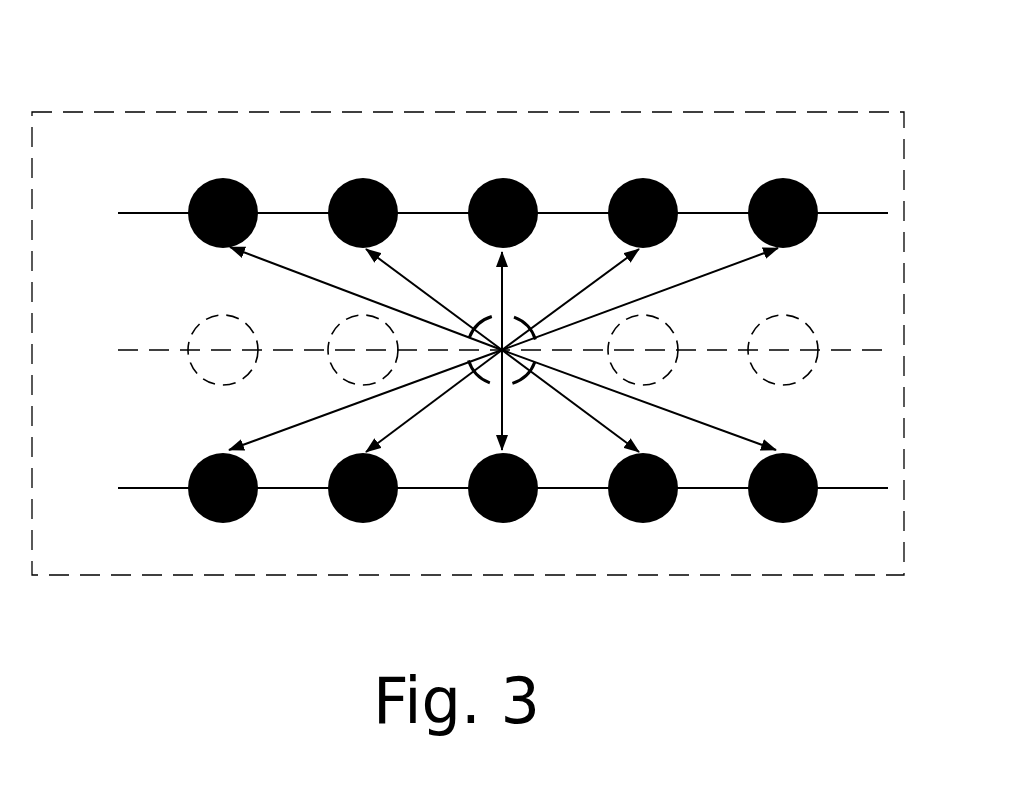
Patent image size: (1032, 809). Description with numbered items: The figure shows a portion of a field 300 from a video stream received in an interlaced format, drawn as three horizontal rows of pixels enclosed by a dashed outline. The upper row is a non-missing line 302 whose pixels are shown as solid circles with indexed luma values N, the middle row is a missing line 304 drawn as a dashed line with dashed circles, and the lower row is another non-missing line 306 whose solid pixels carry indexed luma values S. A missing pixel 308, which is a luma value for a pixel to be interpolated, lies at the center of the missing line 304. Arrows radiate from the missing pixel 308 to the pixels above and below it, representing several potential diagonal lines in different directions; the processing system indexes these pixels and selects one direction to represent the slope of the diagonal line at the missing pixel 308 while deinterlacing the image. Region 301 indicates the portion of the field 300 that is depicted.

The field 300 is at (312, 112).
The array of elements 301 is at (568, 143).
The non-missing line 302 is at (168, 213).
The missing line 304 is at (168, 350).
The non-missing line 306 is at (168, 488).
The missing pixel 308 is at (513, 312).